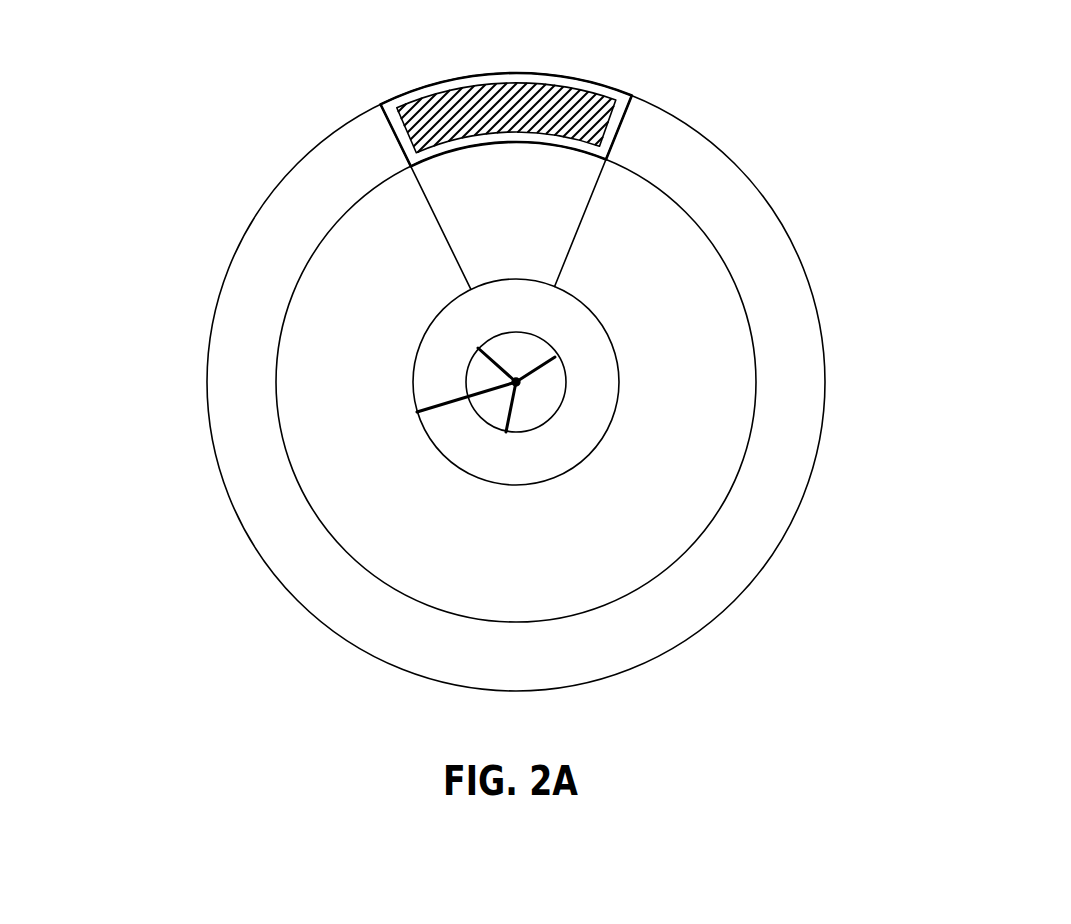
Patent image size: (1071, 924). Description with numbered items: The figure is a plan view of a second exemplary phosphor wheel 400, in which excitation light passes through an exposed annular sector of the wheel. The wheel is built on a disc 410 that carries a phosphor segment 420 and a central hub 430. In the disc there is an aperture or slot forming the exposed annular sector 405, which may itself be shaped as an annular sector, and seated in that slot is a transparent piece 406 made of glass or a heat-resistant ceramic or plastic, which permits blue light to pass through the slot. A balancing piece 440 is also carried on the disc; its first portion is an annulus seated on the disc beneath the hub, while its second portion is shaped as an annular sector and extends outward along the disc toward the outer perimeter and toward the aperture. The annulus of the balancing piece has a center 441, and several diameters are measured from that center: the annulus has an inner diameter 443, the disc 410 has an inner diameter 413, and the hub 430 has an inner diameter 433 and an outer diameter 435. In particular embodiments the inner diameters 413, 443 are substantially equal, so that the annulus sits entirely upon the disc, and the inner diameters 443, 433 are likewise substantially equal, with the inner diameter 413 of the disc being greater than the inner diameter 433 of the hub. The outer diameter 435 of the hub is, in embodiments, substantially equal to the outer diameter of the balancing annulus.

The phosphor wheel 400 is at (82, 123).
The exposed annular sector 405 is at (632, 96).
The transparent piece 406 is at (467, 118).
The disc 410 is at (445, 553).
The phosphor segment 420 is at (273, 245).
The hub 430 is at (453, 420).
The inner diameter of the disc 413 is at (485, 352).
The inner diameter of the hub 433 is at (543, 360).
The outer diameter of the hub 435 is at (445, 396).
The balancing piece 440 is at (533, 237).
The center 441 is at (516, 382).
The inner diameter of the annulus 443 is at (513, 413).